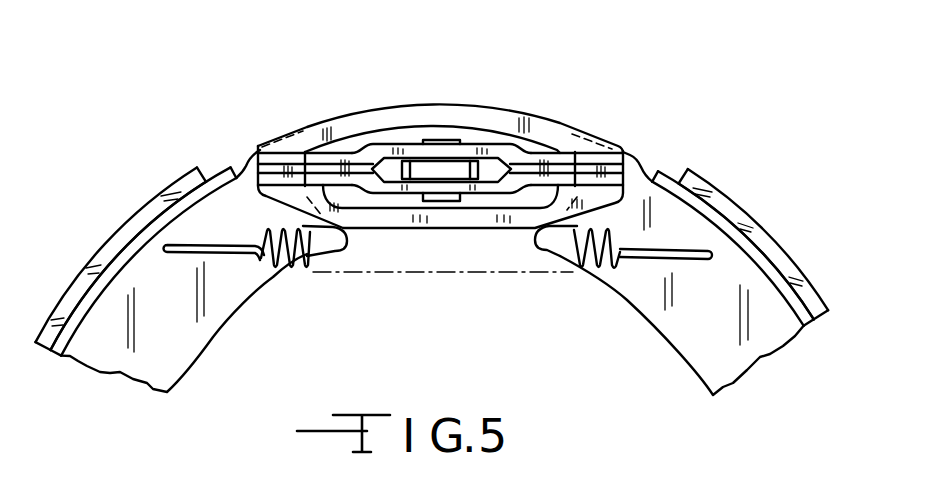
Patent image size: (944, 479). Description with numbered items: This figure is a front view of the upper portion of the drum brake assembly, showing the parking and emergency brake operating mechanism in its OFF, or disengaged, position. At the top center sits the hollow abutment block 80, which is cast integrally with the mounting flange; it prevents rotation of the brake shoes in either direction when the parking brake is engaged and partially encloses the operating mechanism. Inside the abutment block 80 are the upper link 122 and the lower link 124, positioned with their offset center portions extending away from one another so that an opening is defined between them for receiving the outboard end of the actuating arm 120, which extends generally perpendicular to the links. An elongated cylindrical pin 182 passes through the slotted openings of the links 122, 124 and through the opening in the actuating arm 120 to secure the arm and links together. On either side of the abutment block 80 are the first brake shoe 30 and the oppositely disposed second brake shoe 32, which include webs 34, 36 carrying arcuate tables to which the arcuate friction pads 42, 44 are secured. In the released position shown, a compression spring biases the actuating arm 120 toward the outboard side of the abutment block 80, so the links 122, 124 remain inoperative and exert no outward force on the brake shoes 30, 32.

The first brake shoe 30 is at (91, 254).
The second brake shoe 32 is at (723, 191).
The web 34 is at (185, 310).
The web 36 is at (725, 328).
The arcuate friction pad 42 is at (143, 187).
The arcuate friction pad 44 is at (791, 260).
The abutment block 80 is at (523, 113).
The actuating arm 120 is at (382, 182).
The upper link 122 is at (362, 137).
The lower link 124 is at (487, 201).
The pin 182 is at (446, 140).